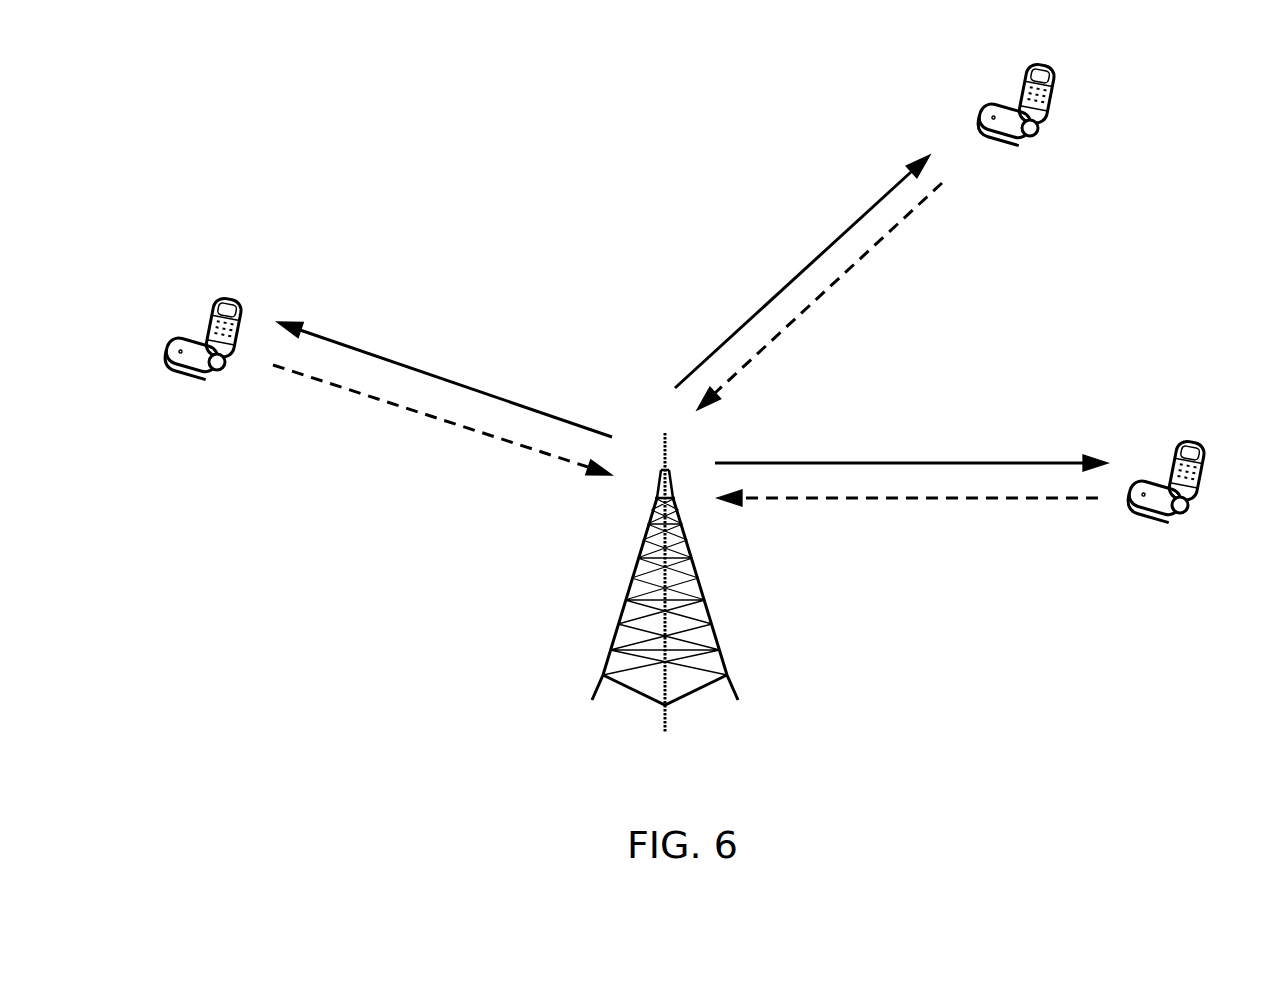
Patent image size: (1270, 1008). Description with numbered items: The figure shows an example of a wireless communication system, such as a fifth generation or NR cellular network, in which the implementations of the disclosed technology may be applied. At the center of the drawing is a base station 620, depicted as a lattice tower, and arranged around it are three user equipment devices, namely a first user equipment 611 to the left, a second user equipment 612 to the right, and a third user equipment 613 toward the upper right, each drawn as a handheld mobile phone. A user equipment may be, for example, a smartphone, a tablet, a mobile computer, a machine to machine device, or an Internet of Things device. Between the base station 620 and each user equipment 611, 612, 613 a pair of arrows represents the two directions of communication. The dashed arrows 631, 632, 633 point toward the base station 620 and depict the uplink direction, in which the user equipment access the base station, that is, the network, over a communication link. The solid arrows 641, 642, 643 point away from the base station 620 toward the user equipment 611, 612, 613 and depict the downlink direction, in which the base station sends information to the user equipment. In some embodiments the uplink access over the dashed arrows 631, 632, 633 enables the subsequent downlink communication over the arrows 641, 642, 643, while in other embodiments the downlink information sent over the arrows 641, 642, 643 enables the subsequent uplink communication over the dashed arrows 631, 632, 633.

The user equipment 611 is at (213, 378).
The user equipment 612 is at (1173, 522).
The user equipment 613 is at (1028, 145).
The base station 620 is at (722, 657).
The dashed arrow 631 is at (483, 433).
The dashed arrow 632 is at (870, 498).
The dashed arrow 633 is at (843, 270).
The arrow 641 is at (380, 357).
The arrow 642 is at (1018, 463).
The arrow 643 is at (852, 223).